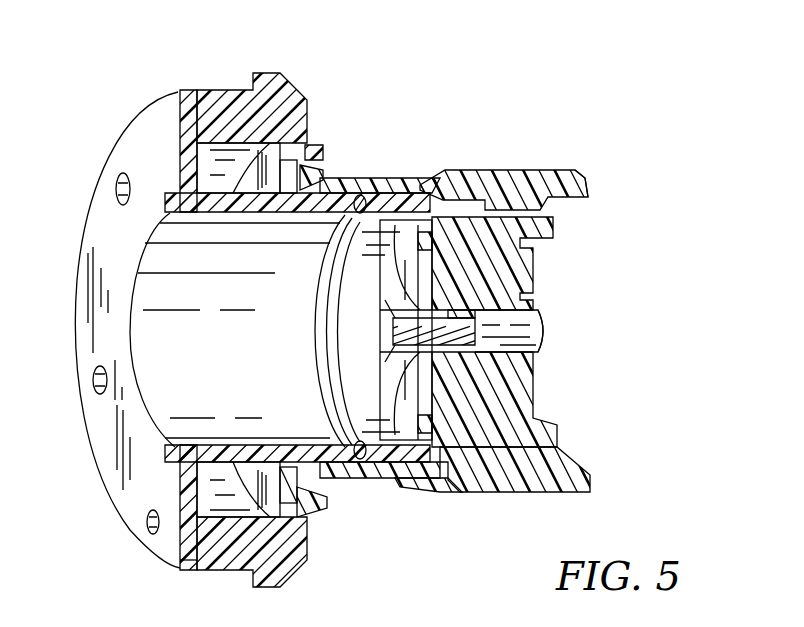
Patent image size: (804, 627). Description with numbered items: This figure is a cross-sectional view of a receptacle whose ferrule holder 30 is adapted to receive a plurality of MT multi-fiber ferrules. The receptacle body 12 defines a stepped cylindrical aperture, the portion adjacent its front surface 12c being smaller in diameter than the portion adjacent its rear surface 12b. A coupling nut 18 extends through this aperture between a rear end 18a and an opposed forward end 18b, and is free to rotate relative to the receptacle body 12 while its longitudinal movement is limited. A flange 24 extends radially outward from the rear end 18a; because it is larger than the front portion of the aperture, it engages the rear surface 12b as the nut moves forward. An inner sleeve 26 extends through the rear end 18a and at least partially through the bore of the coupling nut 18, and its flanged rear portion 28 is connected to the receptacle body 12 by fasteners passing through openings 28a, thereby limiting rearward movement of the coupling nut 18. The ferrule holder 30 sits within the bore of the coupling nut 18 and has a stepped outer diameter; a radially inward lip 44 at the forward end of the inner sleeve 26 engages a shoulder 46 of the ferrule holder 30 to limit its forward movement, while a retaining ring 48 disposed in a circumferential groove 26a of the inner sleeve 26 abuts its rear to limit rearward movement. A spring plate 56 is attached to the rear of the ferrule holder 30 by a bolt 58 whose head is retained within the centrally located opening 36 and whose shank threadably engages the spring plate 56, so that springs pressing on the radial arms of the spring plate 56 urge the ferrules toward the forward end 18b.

The receptacle body 12 is at (283, 108).
The rear surface of the receptacle body 12b is at (190, 568).
The front surface of the receptacle body 12c is at (309, 128).
The coupling nut 18 is at (522, 171).
The rear end of the coupling nut 18a is at (300, 482).
The forward end of the coupling nut 18b is at (588, 183).
The flange 24 is at (280, 495).
The inner sleeve 26 is at (175, 398).
The circumferential groove 26a is at (359, 198).
The flanged rear portion 28 is at (196, 98).
The openings 28a is at (117, 188).
The ferrule holder 30 is at (515, 260).
The centrally located opening 36 is at (538, 320).
The lip or rib 44 is at (468, 470).
The shoulder 46 is at (447, 464).
The retaining ring 48 is at (305, 345).
The spring plate 56 is at (390, 360).
The bolt 58 is at (535, 344).